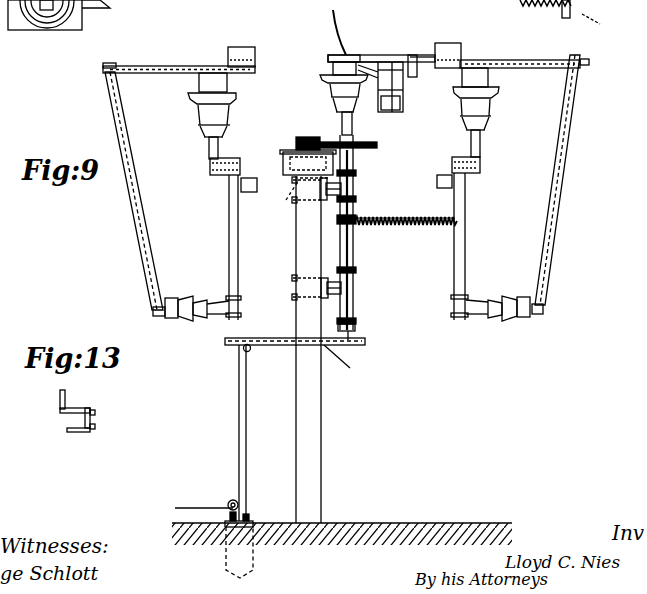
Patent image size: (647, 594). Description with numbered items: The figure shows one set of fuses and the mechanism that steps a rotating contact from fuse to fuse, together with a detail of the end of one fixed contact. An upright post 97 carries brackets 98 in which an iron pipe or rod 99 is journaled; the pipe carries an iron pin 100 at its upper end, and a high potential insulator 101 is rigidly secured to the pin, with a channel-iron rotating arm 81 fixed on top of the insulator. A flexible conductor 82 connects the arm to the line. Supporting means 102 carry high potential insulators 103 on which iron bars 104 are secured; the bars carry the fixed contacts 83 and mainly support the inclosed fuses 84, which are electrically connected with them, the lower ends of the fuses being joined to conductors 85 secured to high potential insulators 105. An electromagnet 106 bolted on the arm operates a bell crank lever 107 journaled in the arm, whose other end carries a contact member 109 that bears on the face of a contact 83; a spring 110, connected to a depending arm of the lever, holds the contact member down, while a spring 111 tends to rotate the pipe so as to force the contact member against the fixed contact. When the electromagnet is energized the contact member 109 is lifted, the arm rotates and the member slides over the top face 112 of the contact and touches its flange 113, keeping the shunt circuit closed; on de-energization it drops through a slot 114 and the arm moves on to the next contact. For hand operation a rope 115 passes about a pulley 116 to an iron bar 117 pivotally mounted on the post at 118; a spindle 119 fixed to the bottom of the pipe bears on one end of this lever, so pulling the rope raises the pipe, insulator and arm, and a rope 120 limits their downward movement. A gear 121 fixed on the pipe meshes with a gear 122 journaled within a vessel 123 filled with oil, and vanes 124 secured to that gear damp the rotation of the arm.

In FIG. 9, the rotating arm 81 is at (363, 55).
In FIG. 9, the flexible conductor 82 is at (337, 27).
In FIG. 9, the fixed contact 83 is at (243, 47).
In FIG. 13, the fixed contact 83 is at (82, 408).
In FIG. 9, the inclosed fuse 84 is at (140, 224).
In FIG. 9, the conductor 85 is at (158, 318).
In FIG. 9, the upright post 97 is at (313, 427).
In FIG. 9, the bracket 98 is at (344, 192).
In FIG. 9, the iron pipe or rod 99 is at (355, 306).
In FIG. 9, the iron pin 100 is at (353, 126).
In FIG. 9, the high potential insulator 101 is at (340, 99).
In FIG. 9, the supporting means 102 is at (232, 221).
In FIG. 9, the high potential insulator 103 is at (210, 122).
In FIG. 9, the iron bar 104 is at (162, 68).
In FIG. 9, the high potential insulator 105 is at (183, 322).
In FIG. 9, the electromagnet 106 is at (399, 99).
In FIG. 9, the bell crank lever 107 is at (397, 58).
In FIG. 9, the contact member 109 is at (425, 55).
In FIG. 13, the contact member 109 is at (94, 413).
In FIG. 9, the spring 110 is at (503, 0).
In FIG. 9, the spring 111 is at (420, 226).
In FIG. 13, the top face 112 is at (78, 408).
In FIG. 13, the flange 113 is at (62, 396).
In FIG. 13, the slot 114 is at (71, 414).
In FIG. 9, the rope 115 is at (188, 507).
In FIG. 9, the pulley 116 is at (231, 500).
In FIG. 9, the iron bar 117 is at (366, 341).
In FIG. 9, the pivot 118 is at (351, 363).
In FIG. 9, the spindle 119 is at (350, 333).
In FIG. 9, the rope 120 is at (249, 452).
In FIG. 9, the gear 121 is at (336, 141).
In FIG. 9, the gear 122 is at (298, 142).
In FIG. 9, the vessel 123 is at (288, 158).
In FIG. 9, the vanes 124 is at (280, 198).